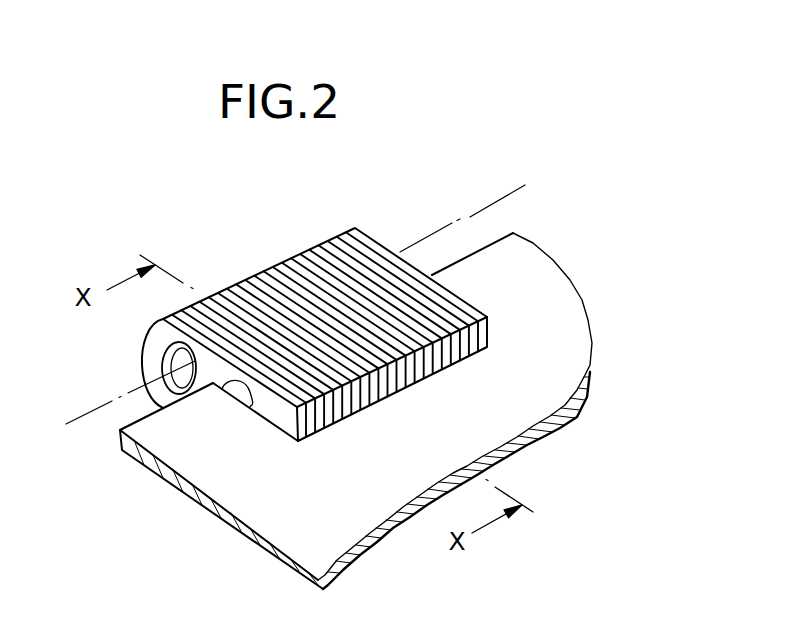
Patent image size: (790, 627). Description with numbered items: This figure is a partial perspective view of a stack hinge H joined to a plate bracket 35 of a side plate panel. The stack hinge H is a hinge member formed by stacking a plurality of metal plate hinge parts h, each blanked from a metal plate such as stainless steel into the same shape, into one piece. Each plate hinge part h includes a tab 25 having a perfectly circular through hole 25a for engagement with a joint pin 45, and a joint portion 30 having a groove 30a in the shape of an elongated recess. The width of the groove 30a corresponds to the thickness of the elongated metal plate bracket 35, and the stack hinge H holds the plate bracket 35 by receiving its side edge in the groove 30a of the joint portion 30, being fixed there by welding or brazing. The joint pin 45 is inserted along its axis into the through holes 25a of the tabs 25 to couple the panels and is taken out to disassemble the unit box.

The stack hinge H is at (261, 357).
The plate hinge part h is at (293, 243).
The tab 25 is at (116, 363).
The through hole 25a is at (163, 366).
The joint portion 30 is at (197, 487).
The groove 30a is at (246, 390).
The plate bracket 35 is at (588, 306).
The joint pin 45 is at (472, 210).